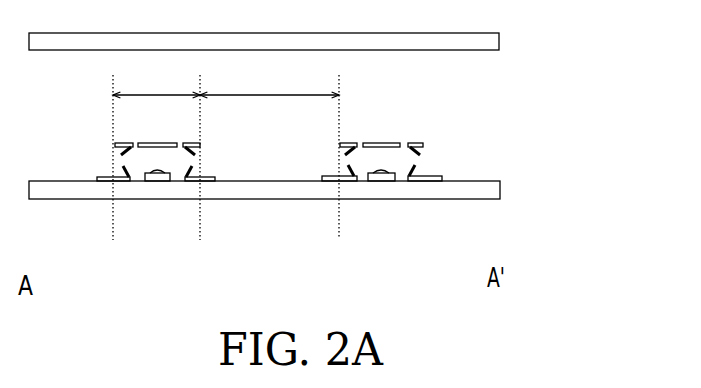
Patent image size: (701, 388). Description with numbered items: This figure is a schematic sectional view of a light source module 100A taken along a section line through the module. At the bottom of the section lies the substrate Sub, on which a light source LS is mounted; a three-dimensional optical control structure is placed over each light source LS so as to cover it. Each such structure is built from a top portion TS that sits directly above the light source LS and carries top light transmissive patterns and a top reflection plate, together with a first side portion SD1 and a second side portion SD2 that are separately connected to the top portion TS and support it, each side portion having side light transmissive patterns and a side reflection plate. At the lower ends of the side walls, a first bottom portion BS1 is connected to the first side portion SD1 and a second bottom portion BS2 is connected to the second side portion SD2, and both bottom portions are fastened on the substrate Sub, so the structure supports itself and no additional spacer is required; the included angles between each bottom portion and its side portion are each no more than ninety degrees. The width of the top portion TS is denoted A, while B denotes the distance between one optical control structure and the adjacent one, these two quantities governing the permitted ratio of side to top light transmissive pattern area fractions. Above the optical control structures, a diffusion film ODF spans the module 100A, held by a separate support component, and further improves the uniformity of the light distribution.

The diffusion film ODF is at (495, 41).
The substrate Sub is at (490, 190).
The top portion TS is at (150, 141).
The light source LS is at (160, 177).
The first side portion SD1 is at (202, 154).
The second side portion SD2 is at (113, 154).
The first bottom portion BS1 is at (422, 182).
The second bottom portion BS2 is at (330, 182).
The width of the top portion A is at (156, 151).
The distance between adjacent three-dimensional optical control structures B is at (269, 150).
The light source module 100A is at (632, 294).